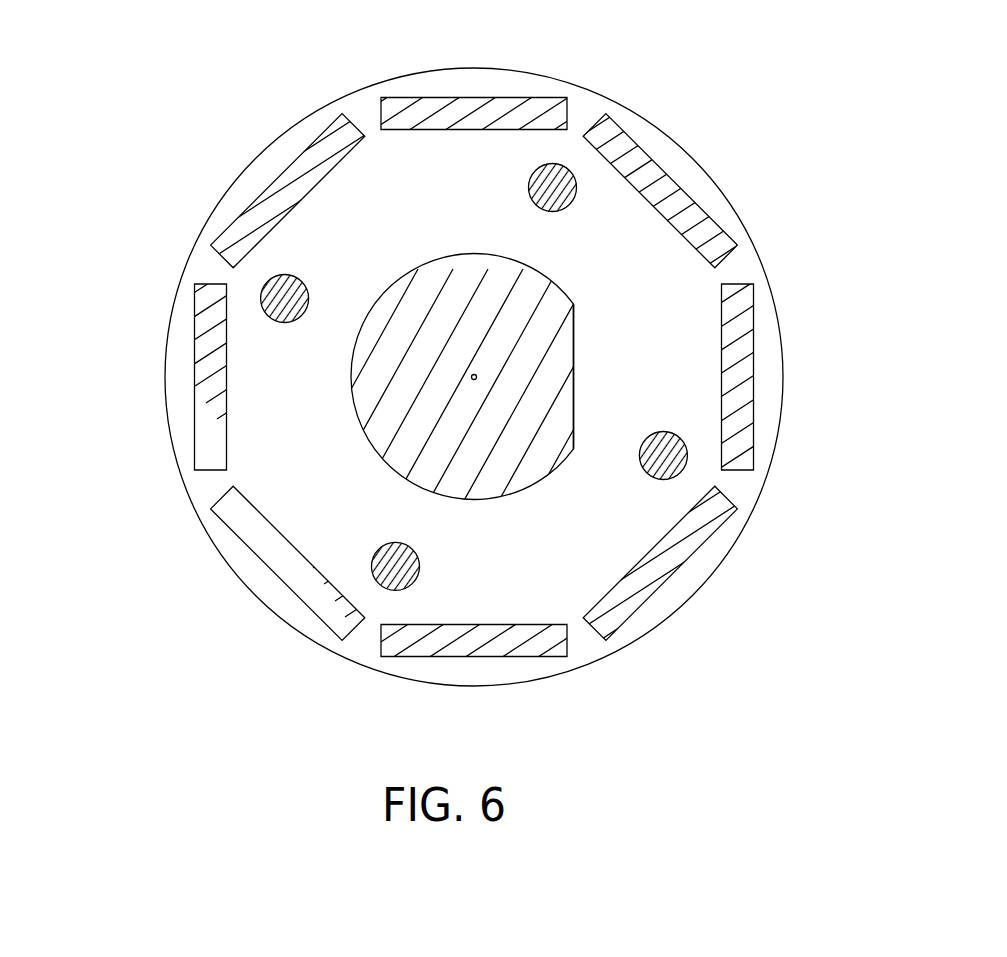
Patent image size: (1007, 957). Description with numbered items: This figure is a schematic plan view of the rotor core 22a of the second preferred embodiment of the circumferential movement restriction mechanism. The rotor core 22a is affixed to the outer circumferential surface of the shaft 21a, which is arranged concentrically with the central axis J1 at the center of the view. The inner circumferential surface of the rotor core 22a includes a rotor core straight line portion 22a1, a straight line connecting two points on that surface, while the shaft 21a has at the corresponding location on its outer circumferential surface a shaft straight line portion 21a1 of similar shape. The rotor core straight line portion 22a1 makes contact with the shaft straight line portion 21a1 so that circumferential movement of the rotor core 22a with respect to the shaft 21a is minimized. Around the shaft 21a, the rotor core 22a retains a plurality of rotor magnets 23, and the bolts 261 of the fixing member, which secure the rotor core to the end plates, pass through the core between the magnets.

The rotor core 22a is at (190, 504).
The shaft 21a is at (432, 292).
The central axis J1 is at (472, 378).
The shaft straight line portion 21a1 is at (574, 368).
The rotor core straight line portion 22a1 is at (574, 365).
The rotor magnets 23 is at (505, 112).
The bolts 261 is at (551, 187).